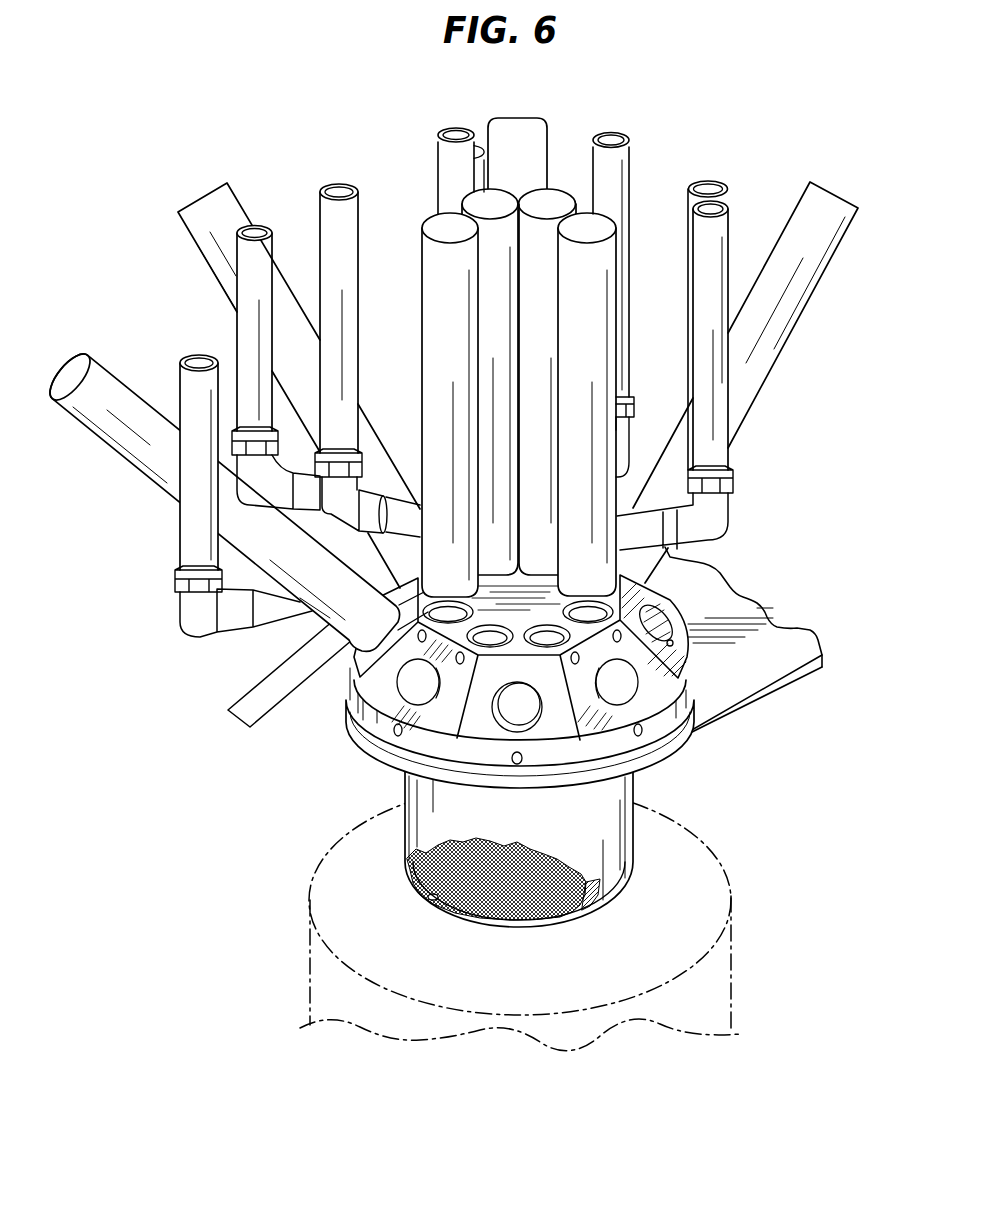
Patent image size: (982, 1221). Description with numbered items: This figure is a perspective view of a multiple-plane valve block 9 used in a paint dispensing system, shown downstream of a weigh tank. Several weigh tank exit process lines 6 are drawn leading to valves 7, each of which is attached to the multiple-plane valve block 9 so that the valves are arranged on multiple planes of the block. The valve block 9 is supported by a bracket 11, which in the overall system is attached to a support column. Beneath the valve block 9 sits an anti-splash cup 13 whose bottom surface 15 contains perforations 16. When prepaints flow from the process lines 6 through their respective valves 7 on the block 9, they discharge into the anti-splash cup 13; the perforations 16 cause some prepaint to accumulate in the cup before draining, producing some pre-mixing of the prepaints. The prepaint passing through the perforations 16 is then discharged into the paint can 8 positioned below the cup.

The weigh tank exit process line 6 is at (253, 225).
The valve 7 is at (507, 125).
The paint can 8 is at (303, 907).
The multiple-plane valve block 9 is at (660, 727).
The bracket 11 is at (747, 645).
The anti-splash cup 13 is at (633, 822).
The bottom surface 15 is at (602, 907).
The perforations 16 is at (497, 882).